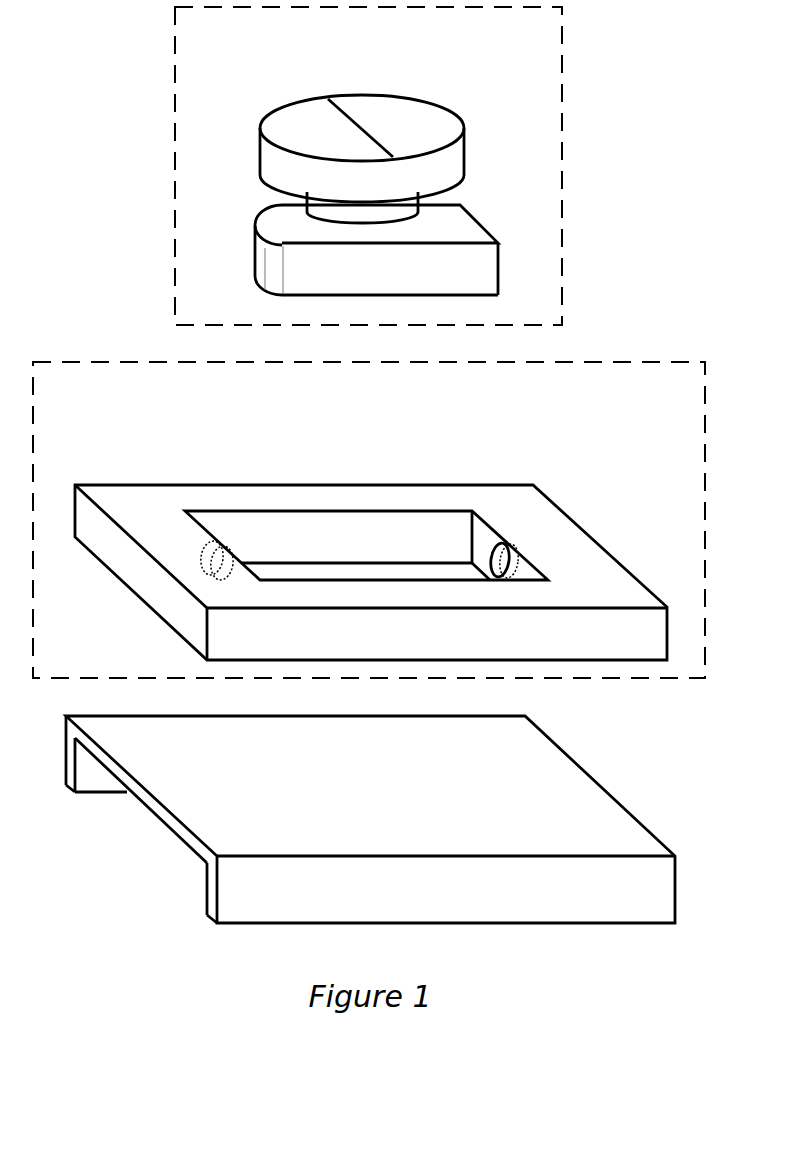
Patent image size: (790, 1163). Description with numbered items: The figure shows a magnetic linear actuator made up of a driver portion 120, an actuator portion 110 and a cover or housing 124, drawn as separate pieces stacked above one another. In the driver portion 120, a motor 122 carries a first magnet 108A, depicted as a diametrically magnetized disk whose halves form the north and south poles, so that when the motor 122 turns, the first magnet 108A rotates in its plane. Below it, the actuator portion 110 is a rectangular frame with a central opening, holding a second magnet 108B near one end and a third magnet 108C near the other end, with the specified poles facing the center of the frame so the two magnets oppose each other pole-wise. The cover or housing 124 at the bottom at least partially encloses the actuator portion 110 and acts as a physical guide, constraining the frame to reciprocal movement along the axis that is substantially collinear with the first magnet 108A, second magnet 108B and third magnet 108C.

The first magnet 108A is at (362, 93).
The driver portion 120 is at (528, 86).
The motor 122 is at (358, 287).
The actuator portion 110 is at (72, 437).
The third magnet 108C is at (211, 553).
The second magnet 108B is at (500, 553).
The housing or cover 124 is at (352, 817).